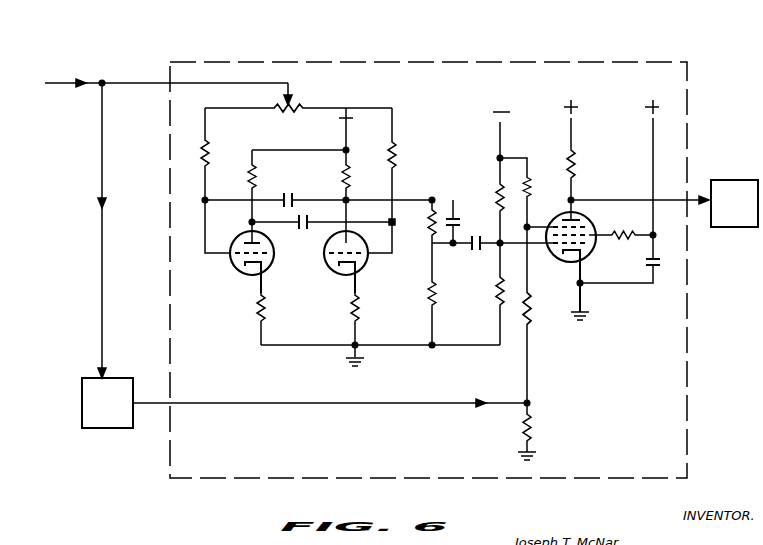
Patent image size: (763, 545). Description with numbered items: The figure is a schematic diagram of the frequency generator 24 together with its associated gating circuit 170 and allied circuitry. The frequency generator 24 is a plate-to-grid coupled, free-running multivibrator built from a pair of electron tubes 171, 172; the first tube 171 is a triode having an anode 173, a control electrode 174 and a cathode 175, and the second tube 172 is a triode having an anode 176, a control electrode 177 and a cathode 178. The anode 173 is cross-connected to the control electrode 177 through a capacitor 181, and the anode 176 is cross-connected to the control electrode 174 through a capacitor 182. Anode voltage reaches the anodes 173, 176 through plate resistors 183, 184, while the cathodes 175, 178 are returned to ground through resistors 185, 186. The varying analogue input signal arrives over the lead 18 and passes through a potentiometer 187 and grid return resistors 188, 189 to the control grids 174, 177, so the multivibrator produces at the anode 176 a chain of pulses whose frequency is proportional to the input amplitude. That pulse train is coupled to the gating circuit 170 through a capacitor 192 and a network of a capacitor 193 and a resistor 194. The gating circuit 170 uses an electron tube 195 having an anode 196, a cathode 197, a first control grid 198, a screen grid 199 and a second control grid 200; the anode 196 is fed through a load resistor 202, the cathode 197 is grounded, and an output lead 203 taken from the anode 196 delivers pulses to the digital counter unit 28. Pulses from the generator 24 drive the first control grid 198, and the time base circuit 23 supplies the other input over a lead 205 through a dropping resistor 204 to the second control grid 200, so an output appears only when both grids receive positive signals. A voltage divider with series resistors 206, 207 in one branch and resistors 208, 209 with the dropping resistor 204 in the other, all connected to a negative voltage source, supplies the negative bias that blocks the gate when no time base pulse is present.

The lead 18 is at (57, 83).
The time base circuit 23 is at (117, 412).
The frequency generator 24 is at (436, 60).
The digital counter unit 28 is at (745, 212).
The gating circuit 170 is at (584, 92).
The electron tube 171 is at (242, 235).
The electron tube 172 is at (328, 262).
The anode 173 is at (262, 240).
The control electrode 174 is at (270, 253).
The cathode 175 is at (254, 278).
The anode 176 is at (358, 241).
The control electrode 177 is at (363, 258).
The cathode 178 is at (353, 279).
The capacitor 181 is at (310, 216).
The capacitor 182 is at (294, 186).
The plate resistor 183 is at (250, 178).
The plate resistor 184 is at (352, 178).
The resistor 185 is at (256, 309).
The resistor 186 is at (354, 309).
The potentiometer 187 is at (302, 103).
The grid return resistor 188 is at (207, 147).
The grid return resistor 189 is at (395, 158).
The capacitor 192 is at (482, 252).
The capacitor 193 is at (478, 194).
The resistor 194 is at (405, 205).
The electron tube 195 is at (576, 208).
The anode 196 is at (564, 220).
The cathode 197 is at (586, 258).
The first control grid 198 is at (598, 238).
The screen grid 199 is at (548, 246).
The second control grid 200 is at (590, 219).
The load resistor 202 is at (576, 160).
The output lead 203 is at (610, 200).
The dropping resistor 204 is at (530, 312).
The lead 205 is at (265, 402).
The resistor 206 is at (488, 182).
The resistor 207 is at (498, 286).
The resistor 208 is at (528, 178).
The resistor 209 is at (531, 422).